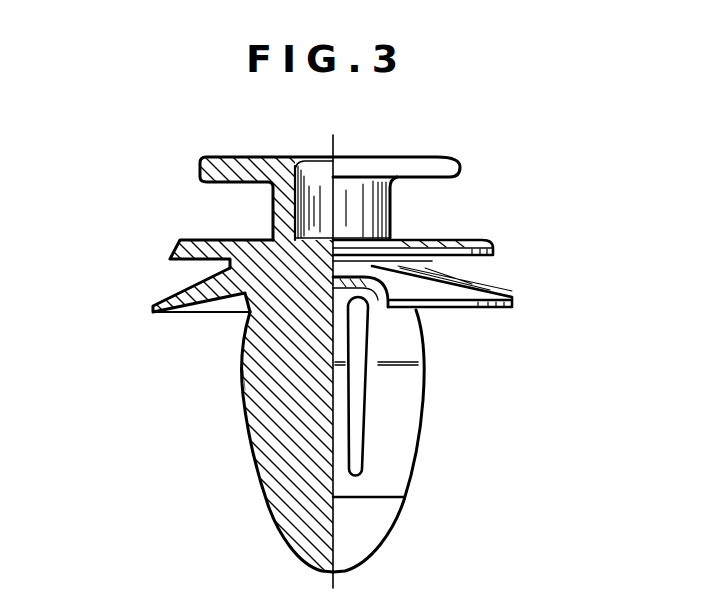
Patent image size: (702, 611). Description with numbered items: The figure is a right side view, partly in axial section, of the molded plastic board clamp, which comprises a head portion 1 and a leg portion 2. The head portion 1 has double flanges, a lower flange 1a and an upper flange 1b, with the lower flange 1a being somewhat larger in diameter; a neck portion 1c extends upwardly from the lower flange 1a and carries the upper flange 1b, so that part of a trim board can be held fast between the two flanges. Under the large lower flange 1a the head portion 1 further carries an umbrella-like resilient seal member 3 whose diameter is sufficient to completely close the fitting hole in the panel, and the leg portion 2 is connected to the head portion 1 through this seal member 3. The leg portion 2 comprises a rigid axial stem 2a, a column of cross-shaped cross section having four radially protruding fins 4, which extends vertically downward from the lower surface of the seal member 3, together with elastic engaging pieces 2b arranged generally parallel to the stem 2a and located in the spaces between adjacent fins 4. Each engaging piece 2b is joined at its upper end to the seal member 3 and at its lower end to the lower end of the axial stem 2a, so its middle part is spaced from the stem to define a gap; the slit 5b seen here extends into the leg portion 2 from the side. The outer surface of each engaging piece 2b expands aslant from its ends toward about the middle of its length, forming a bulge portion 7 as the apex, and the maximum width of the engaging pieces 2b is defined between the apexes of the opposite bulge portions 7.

The head portion 1 is at (118, 115).
The lower flange 1a is at (180, 243).
The upper flange 1b is at (202, 170).
The neck portion 1c is at (393, 210).
The leg portion 2 is at (260, 502).
The axial stem 2a is at (257, 433).
The engaging pieces 2b is at (393, 435).
The seal member 3 is at (166, 300).
The fins 4 is at (265, 382).
The slit 5b is at (353, 380).
The bulge portion 7 is at (243, 358).